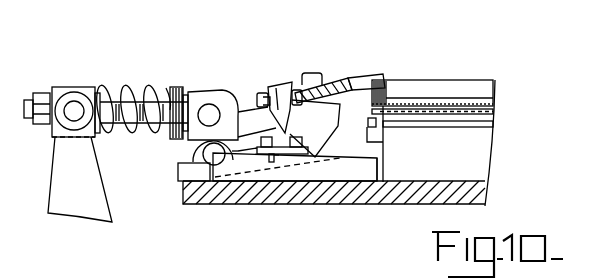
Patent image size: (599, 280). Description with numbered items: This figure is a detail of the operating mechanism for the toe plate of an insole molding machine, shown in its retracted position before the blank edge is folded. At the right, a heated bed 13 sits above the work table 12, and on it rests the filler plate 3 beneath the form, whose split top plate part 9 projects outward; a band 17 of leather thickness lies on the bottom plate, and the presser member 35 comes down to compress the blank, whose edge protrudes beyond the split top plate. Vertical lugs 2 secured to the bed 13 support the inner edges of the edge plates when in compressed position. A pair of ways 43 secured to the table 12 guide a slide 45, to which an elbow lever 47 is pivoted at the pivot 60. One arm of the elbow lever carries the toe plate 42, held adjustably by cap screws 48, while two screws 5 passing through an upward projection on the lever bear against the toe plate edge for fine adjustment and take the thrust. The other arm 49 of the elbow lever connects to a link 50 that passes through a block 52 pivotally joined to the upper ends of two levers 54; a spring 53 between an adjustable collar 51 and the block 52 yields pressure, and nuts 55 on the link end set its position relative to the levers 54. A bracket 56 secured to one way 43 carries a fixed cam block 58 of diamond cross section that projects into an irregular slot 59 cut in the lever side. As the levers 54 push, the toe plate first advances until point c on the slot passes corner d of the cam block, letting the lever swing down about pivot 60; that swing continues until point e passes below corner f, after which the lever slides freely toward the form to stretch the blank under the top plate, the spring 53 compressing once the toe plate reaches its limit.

The nuts 55 is at (45, 93).
The block 52 is at (58, 87).
The levers 54 is at (83, 195).
The link 50 is at (112, 87).
The spring 53 is at (141, 86).
The adjustable collar 51 is at (176, 86).
The other arm of the elbow lever 49 is at (212, 100).
The slide 45 is at (180, 172).
The pivot 60 is at (205, 145).
The elbow lever 47 is at (245, 122).
The screws 5 is at (260, 92).
The slot 59 is at (284, 130).
The point on the side of the slot c is at (288, 128).
The cap screws 48 is at (307, 73).
The corner of the cam block d is at (312, 91).
The toe plate 42 is at (349, 79).
The presser member 35 is at (462, 88).
The split top plate part 9 is at (490, 115).
The band 17 is at (490, 119).
The filler plate 3 is at (495, 131).
The vertical lugs 2 is at (374, 128).
The heated bed 13 is at (480, 157).
The work table 12 is at (485, 198).
The ways 43 is at (360, 167).
The fixed cam block 58 is at (292, 150).
The bracket 56 is at (265, 148).
The point on the side of the slot e is at (270, 150).
The corner of the cam block f is at (277, 156).